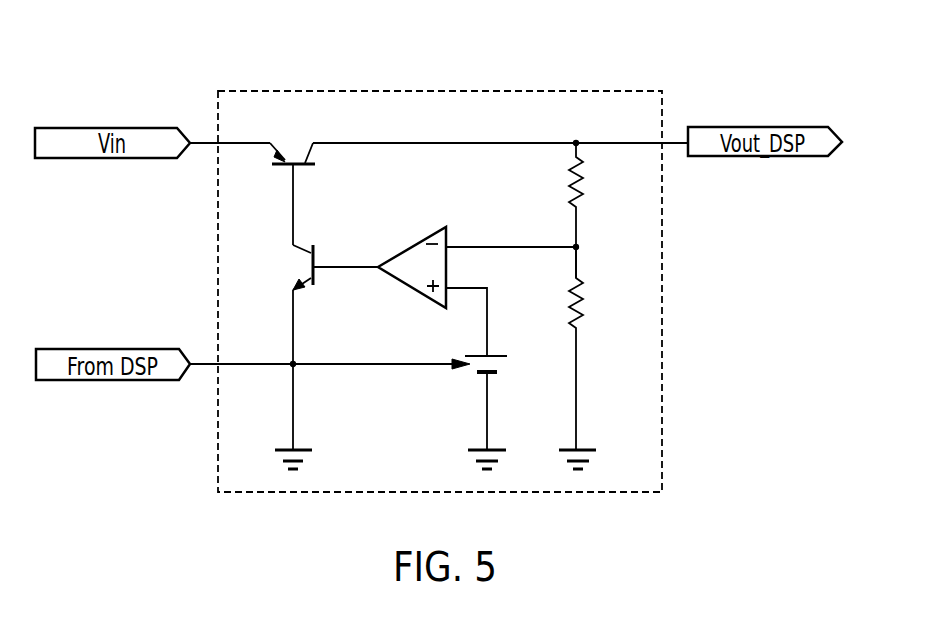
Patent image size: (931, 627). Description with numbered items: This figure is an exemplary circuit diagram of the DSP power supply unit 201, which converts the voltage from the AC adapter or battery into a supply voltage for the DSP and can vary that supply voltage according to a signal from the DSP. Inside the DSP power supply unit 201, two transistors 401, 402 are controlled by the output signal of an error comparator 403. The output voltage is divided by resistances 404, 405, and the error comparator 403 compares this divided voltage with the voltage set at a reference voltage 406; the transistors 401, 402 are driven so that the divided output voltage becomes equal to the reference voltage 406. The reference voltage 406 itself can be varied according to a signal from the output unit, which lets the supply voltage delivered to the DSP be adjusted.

The DSP power supply unit 201 is at (585, 90).
The transistor 401 is at (295, 143).
The transistor 402 is at (316, 248).
The error comparator 403 is at (432, 235).
The resistance 404 is at (585, 180).
The resistance 405 is at (585, 298).
The reference voltage 406 is at (470, 370).